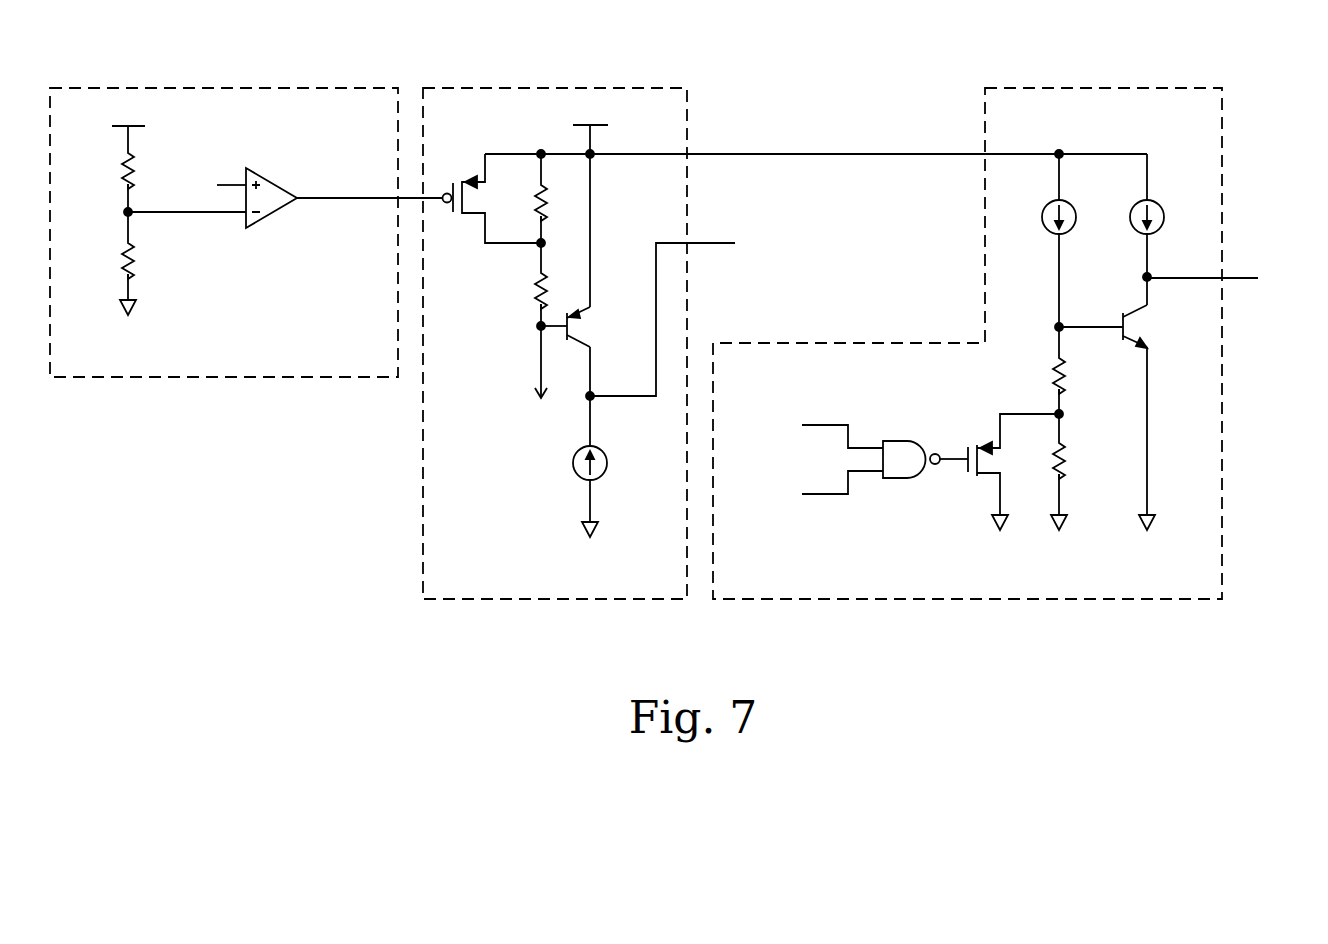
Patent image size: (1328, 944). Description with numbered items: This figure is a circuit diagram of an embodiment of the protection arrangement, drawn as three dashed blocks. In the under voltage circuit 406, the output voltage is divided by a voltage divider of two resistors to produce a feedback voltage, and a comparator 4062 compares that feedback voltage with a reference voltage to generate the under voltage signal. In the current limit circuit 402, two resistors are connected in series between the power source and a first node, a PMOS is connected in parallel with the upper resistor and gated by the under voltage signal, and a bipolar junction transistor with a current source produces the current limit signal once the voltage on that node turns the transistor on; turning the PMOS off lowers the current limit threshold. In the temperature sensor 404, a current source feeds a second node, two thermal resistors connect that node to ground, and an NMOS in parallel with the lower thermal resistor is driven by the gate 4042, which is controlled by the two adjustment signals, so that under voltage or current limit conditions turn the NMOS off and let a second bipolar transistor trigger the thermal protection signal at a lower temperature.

The under voltage circuit 406 is at (236, 88).
The comparator 4062 is at (272, 178).
The current limit circuit 402 is at (556, 88).
The temperature sensor 404 is at (1108, 88).
The XOR gate 4042 is at (896, 440).